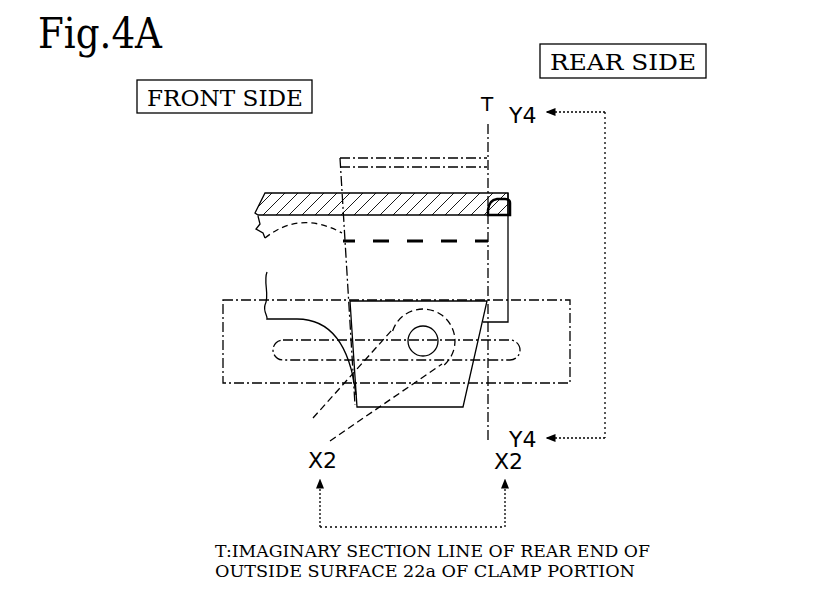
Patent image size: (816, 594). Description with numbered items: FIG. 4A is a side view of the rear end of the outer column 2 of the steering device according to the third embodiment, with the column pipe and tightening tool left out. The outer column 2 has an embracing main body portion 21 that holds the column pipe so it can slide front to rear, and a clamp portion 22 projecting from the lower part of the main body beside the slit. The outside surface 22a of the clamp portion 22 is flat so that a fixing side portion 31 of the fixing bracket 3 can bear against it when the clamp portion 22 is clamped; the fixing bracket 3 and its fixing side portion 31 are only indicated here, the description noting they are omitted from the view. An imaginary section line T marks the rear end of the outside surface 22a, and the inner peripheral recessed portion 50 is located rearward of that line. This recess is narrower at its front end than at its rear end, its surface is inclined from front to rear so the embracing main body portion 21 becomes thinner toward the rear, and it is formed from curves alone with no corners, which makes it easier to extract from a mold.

The outer column 2 is at (300, 191).
The fixing bracket 3 is at (380, 155).
The embracing main body portion 21 is at (509, 258).
The clamp portion 22 is at (472, 366).
The outside surface of clamp portion 22a is at (355, 270).
The fixing side portion 31 is at (256, 230).
The inner peripheral recessed portion 50 is at (514, 207).